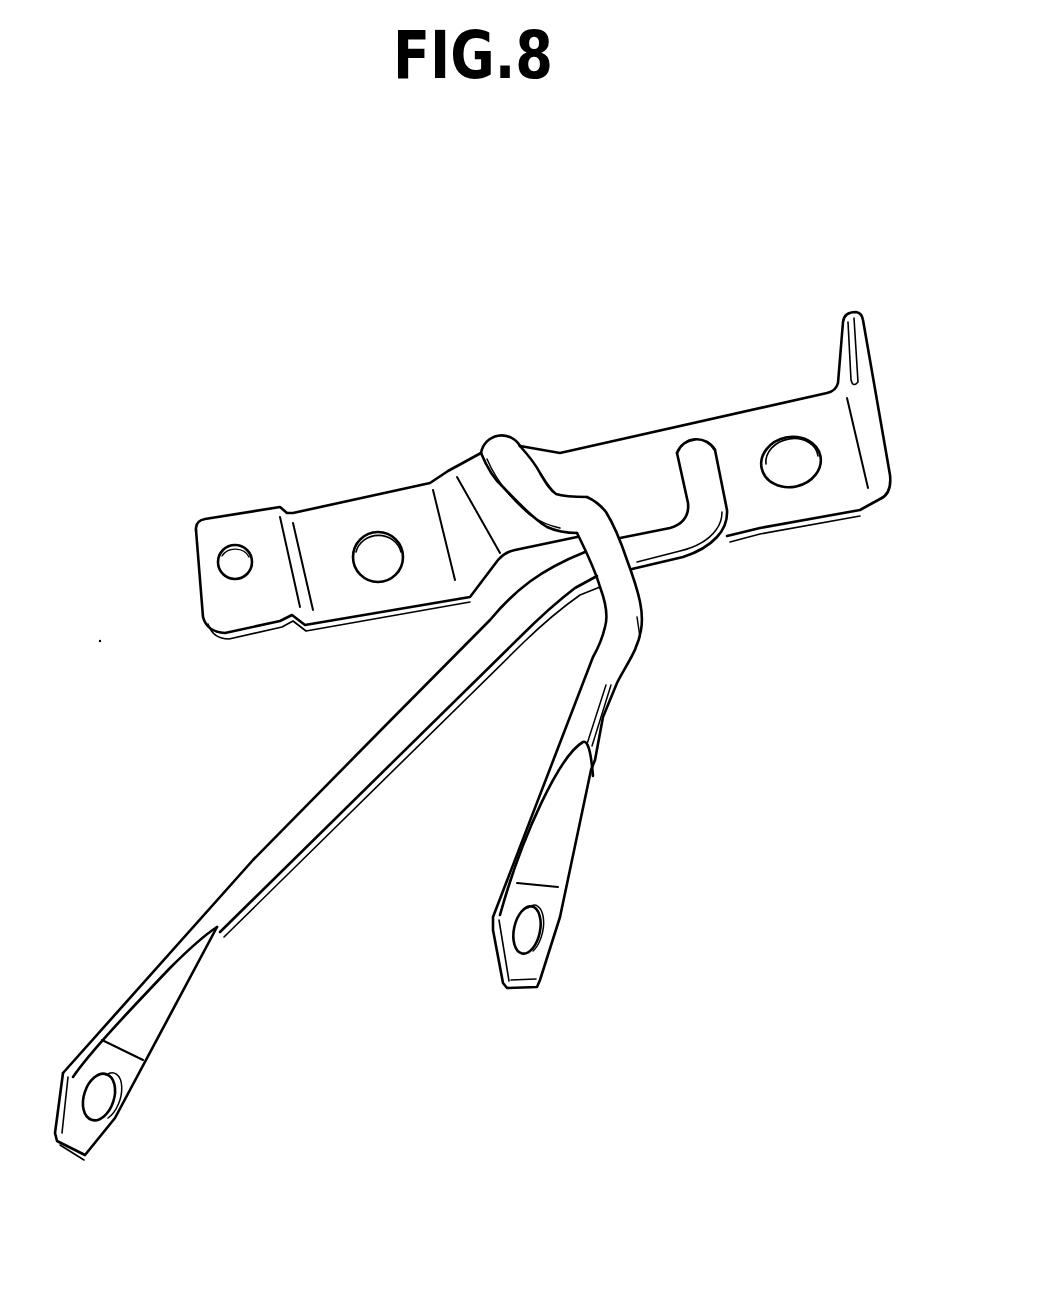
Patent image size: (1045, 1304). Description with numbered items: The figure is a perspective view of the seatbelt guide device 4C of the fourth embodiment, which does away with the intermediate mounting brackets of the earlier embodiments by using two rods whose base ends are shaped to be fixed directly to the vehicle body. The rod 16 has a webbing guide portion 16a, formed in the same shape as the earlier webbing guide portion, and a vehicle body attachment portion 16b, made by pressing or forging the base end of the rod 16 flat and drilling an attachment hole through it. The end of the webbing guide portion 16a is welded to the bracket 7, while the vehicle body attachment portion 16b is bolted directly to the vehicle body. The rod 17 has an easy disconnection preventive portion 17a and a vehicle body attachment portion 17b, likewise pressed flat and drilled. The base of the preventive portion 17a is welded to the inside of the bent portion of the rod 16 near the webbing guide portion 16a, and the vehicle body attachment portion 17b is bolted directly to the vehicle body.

The seatbelt guide device 4C is at (682, 342).
The bracket 7 is at (327, 533).
The rod 16 is at (613, 676).
The webbing guide portion 16a is at (576, 496).
The vehicle body attachment portion 16b is at (564, 921).
The rod 17 is at (441, 799).
The easy disconnection preventive portion 17a is at (697, 560).
The vehicle body attachment portion 17b is at (137, 1092).